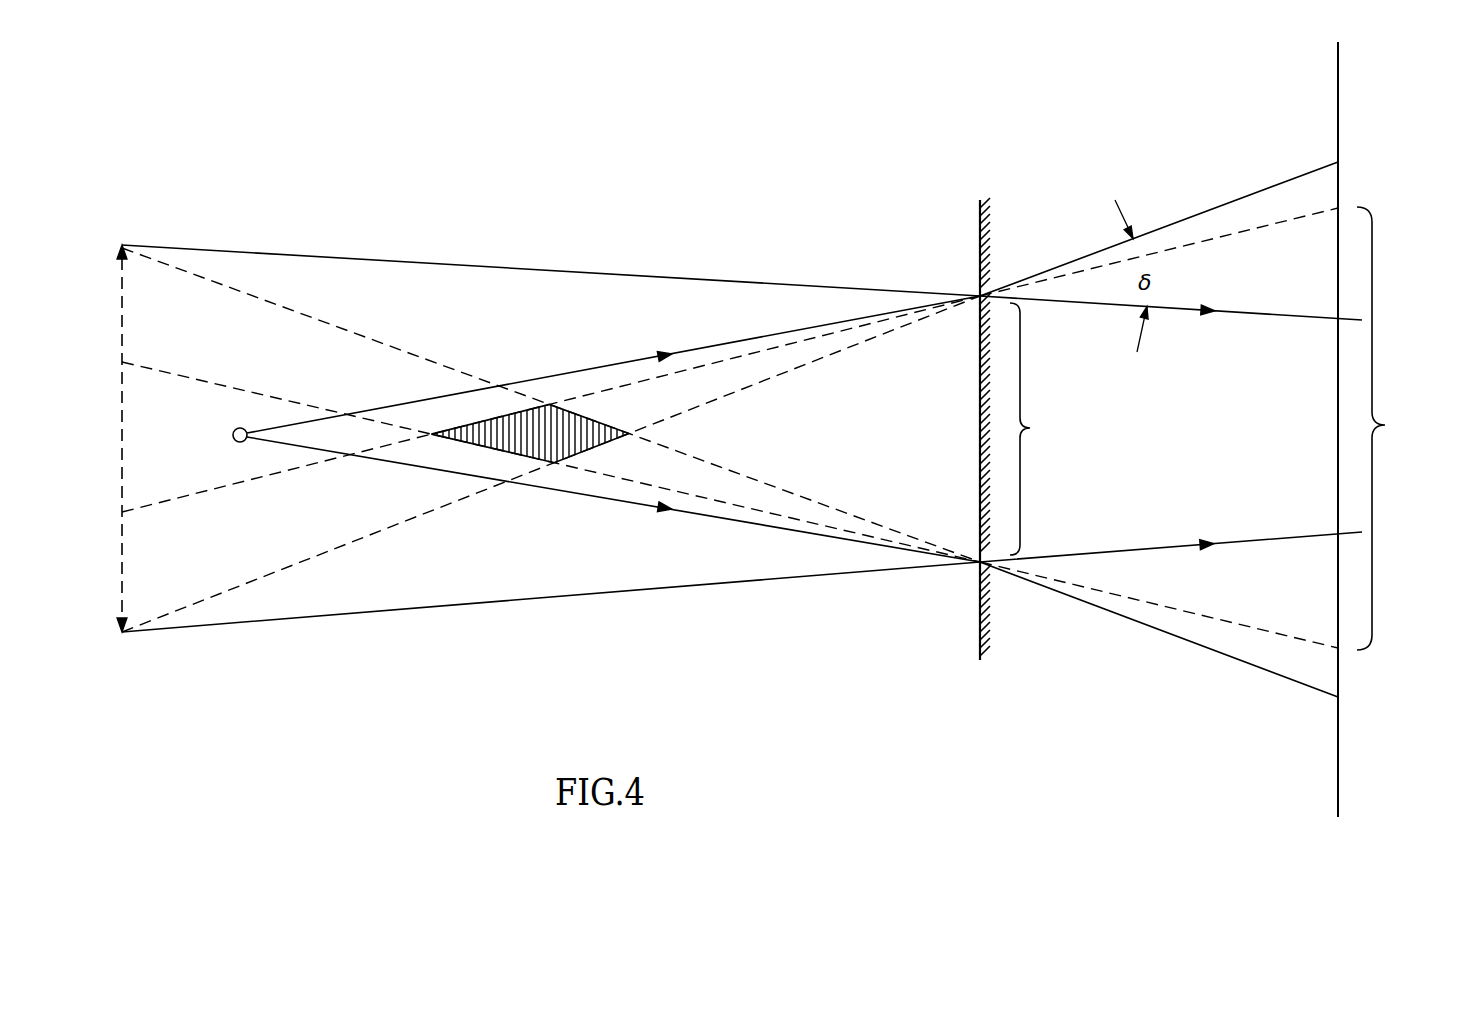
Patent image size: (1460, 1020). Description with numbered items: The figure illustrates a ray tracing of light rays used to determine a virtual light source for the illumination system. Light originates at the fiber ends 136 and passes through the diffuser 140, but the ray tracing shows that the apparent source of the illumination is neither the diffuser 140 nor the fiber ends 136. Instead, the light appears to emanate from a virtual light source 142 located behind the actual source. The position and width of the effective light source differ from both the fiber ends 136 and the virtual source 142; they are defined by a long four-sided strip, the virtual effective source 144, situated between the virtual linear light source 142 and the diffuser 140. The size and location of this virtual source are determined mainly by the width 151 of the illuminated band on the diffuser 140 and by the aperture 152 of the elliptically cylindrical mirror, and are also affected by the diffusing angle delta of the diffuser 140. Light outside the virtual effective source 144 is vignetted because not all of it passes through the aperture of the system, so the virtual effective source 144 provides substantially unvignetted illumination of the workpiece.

The fiber ends 136 is at (240, 427).
The diffuser 140 is at (979, 608).
The virtual light source 142 is at (122, 333).
The virtual effective source 144 is at (600, 445).
The width of the illuminated band 151 is at (1046, 429).
The aperture 152 is at (1402, 428).